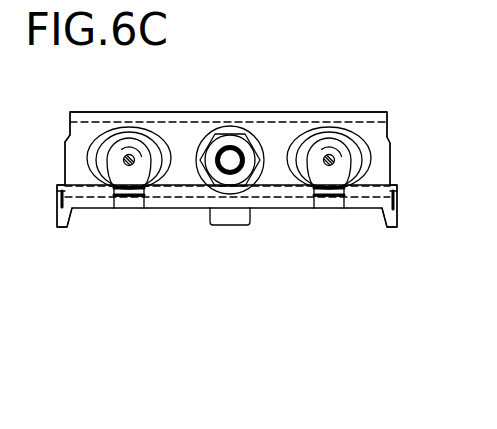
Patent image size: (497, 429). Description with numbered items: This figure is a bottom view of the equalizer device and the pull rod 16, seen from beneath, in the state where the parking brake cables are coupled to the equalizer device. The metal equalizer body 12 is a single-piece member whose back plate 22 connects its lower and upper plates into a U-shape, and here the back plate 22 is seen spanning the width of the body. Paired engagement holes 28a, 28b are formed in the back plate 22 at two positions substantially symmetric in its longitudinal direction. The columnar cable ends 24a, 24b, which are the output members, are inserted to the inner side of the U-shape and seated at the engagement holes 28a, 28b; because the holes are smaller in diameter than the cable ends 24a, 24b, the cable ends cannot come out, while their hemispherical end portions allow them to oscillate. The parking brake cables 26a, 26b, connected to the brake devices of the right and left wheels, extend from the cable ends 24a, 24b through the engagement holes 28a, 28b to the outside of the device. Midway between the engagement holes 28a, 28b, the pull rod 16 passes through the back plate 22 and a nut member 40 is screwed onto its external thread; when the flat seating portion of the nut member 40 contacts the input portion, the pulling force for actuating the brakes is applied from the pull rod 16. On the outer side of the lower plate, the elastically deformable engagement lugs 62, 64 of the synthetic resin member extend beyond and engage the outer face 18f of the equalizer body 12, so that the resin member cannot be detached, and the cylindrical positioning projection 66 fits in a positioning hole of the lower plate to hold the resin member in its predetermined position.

The equalizer body 12 is at (377, 100).
The back plate 22 is at (88, 125).
The outer face 18f is at (181, 208).
The engagement lug 62 is at (55, 213).
The engagement lug 64 is at (392, 217).
The positioning projection 66 is at (230, 213).
The engagement hole 28a is at (126, 145).
The engagement hole 28b is at (326, 145).
The cable end 24a is at (112, 160).
The cable end 24b is at (343, 162).
The parking brake cable 26a is at (133, 167).
The parking brake cable 26b is at (332, 167).
The nut member 40 is at (248, 143).
The pull rod 16 is at (217, 147).